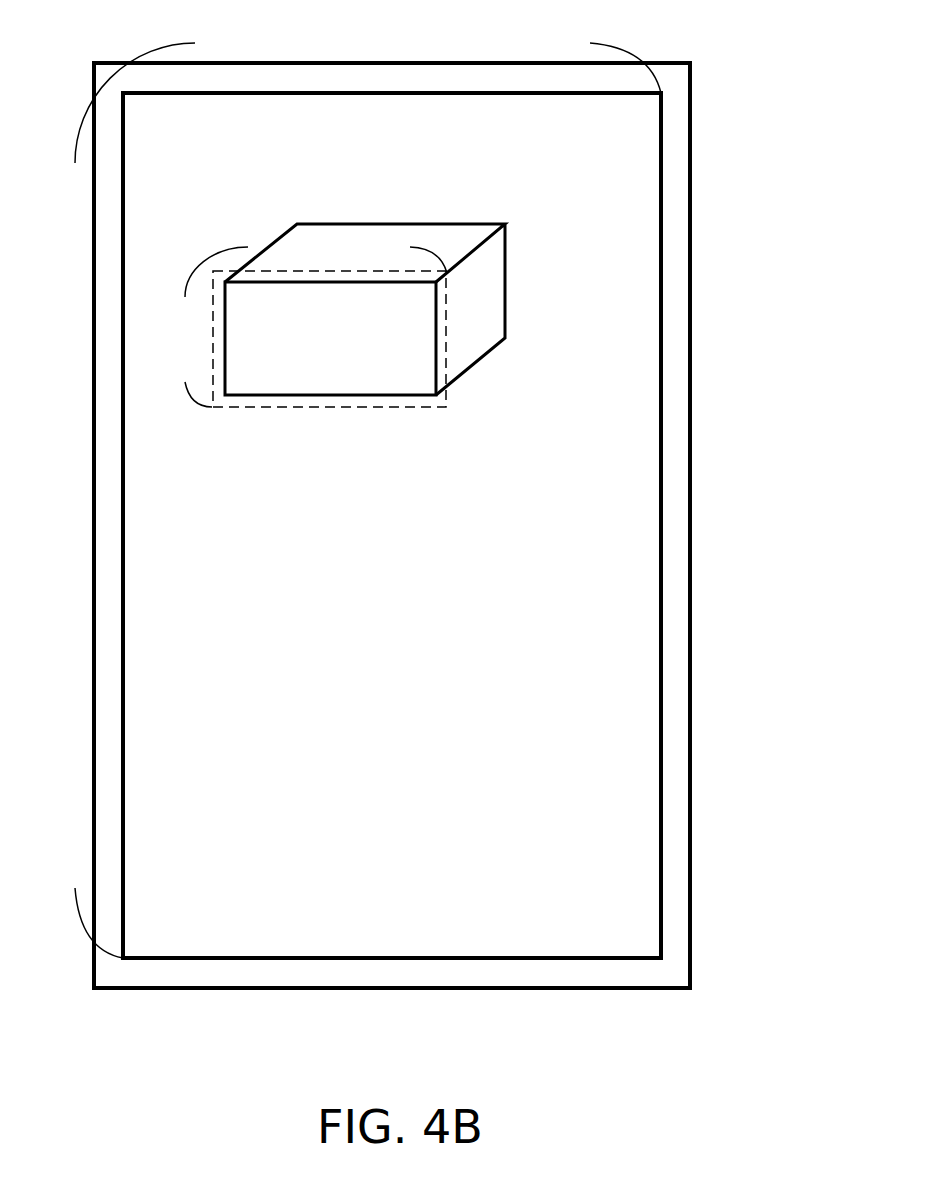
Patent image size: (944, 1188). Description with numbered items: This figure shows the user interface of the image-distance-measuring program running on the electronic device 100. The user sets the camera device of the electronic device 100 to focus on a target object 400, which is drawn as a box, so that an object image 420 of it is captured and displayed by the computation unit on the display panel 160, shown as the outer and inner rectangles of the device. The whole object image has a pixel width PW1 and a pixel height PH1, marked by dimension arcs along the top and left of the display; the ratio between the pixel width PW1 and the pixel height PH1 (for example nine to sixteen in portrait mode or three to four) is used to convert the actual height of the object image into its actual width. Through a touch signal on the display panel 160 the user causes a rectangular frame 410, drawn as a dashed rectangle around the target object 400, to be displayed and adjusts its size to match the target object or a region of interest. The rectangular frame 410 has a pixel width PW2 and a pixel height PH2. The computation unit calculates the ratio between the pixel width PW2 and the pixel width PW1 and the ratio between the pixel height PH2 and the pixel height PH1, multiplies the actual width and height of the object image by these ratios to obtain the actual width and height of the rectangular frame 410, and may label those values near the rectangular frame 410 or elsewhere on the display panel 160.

The electronic device 100 is at (677, 63).
The object image 420 is at (625, 158).
The display panel 160 is at (662, 525).
The target object 400 is at (505, 278).
The rectangular frame 410 is at (330, 407).
The pixel width PW1 is at (368, 95).
The pixel height PH1 is at (73, 733).
The pixel width PW2 is at (316, 264).
The pixel height PH2 is at (179, 364).